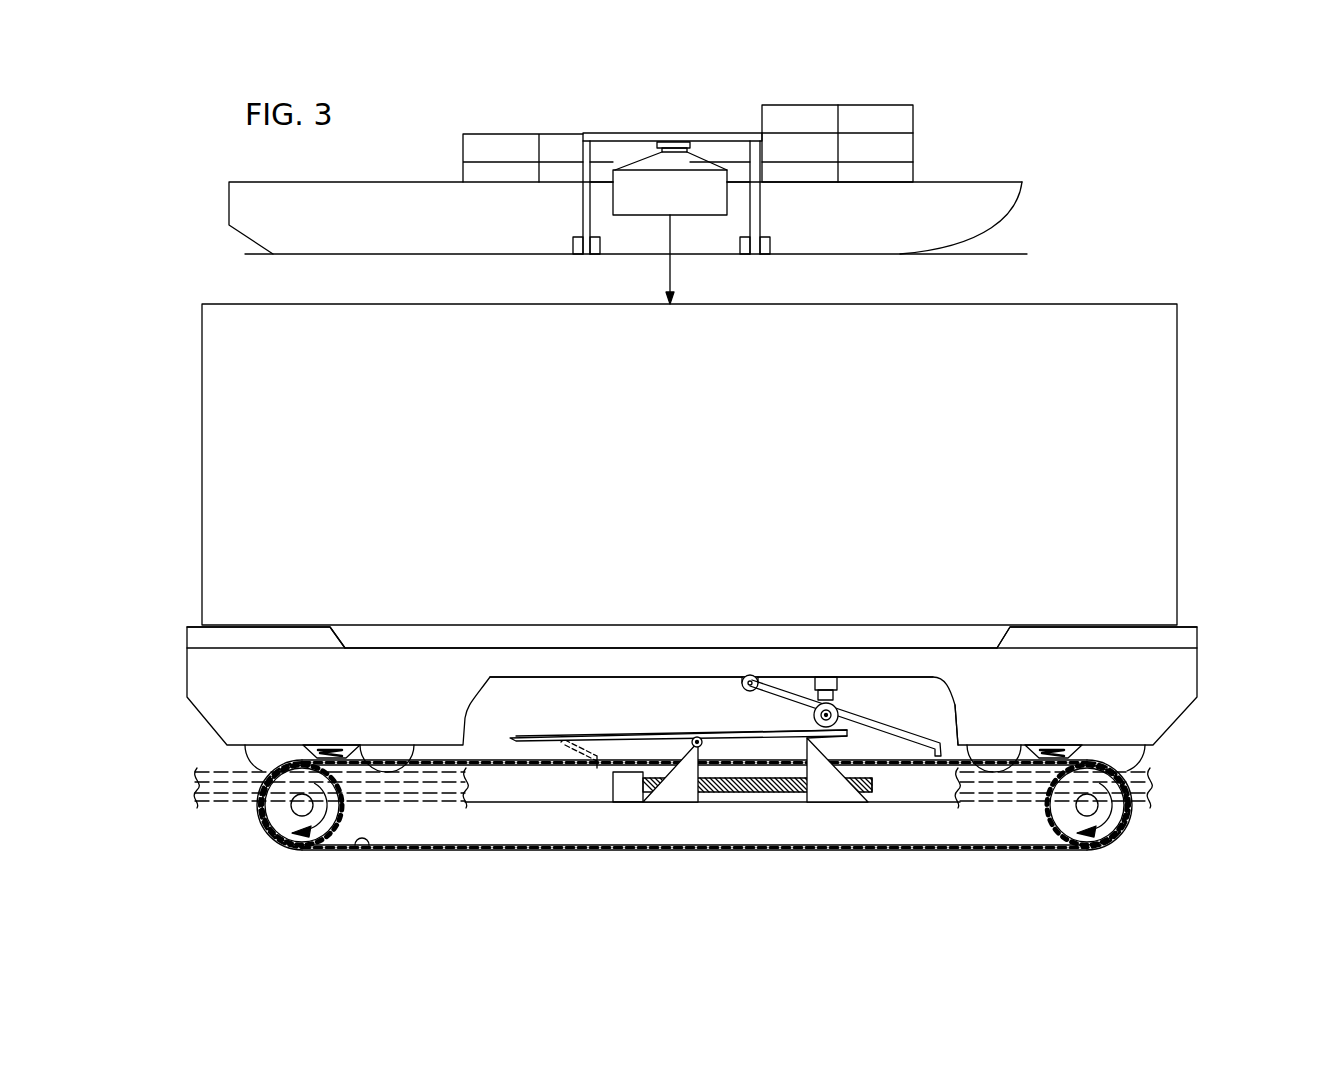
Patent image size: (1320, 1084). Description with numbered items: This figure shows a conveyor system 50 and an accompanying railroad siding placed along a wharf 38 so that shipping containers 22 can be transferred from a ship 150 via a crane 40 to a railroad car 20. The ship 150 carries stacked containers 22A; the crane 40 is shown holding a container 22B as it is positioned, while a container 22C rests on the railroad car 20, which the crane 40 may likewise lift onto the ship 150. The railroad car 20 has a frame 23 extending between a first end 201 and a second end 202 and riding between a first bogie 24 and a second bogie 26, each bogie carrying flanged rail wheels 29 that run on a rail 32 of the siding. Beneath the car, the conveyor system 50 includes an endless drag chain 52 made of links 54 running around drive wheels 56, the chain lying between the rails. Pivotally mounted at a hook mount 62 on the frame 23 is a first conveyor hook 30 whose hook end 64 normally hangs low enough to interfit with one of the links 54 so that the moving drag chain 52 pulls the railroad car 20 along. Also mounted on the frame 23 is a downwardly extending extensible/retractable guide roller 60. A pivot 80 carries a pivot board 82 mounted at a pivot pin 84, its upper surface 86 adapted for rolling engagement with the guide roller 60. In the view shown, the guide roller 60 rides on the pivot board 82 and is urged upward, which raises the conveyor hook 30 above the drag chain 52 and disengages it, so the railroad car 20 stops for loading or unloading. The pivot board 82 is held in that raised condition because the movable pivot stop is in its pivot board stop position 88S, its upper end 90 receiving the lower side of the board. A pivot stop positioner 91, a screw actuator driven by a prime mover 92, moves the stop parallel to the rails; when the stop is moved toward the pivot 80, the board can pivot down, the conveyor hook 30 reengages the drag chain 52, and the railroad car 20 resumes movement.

The railroad car 20 is at (955, 647).
The first end 201 is at (1200, 668).
The second end 202 is at (186, 668).
The shipping containers 22 is at (913, 125).
The containers 22A is at (561, 140).
The container 22B is at (663, 203).
The container 22C is at (1077, 304).
The frame 23 is at (618, 677).
The first bogie 24 is at (317, 745).
The second bogie 26 is at (1040, 745).
The flanged rail wheels 29 is at (245, 760).
The first conveyor hook 30 is at (880, 722).
The first rail 32 is at (212, 792).
The wharf 38 is at (1000, 254).
The crane 40 is at (757, 210).
The conveyor system 50 is at (694, 848).
The drag chain 52 is at (346, 870).
The links 54 is at (407, 851).
The drive wheels 56 is at (308, 848).
The extensible/retractable guide roller 60 is at (840, 706).
The hook mount 62 is at (740, 686).
The hook end 64 is at (943, 743).
The pivot 80 is at (680, 792).
The pivot board 82 is at (516, 737).
The pivot pin 84 is at (691, 740).
The upper surface 86 is at (612, 733).
The pivot board stop position 88S is at (828, 792).
The upper end 90 is at (806, 737).
The pivot stop positioner 91 is at (874, 786).
The prime mover 92 is at (622, 787).
The ship 150 is at (934, 214).